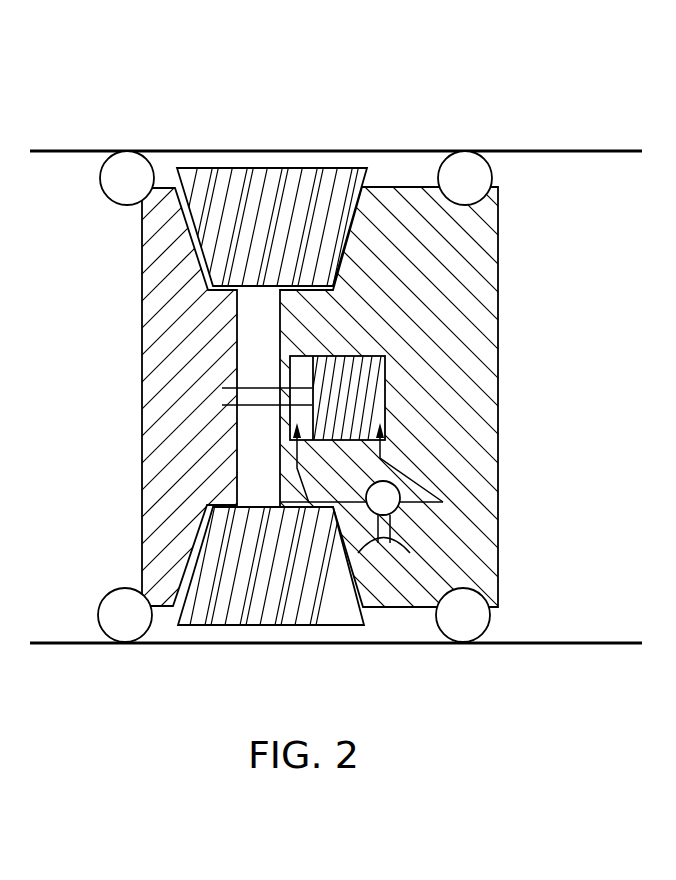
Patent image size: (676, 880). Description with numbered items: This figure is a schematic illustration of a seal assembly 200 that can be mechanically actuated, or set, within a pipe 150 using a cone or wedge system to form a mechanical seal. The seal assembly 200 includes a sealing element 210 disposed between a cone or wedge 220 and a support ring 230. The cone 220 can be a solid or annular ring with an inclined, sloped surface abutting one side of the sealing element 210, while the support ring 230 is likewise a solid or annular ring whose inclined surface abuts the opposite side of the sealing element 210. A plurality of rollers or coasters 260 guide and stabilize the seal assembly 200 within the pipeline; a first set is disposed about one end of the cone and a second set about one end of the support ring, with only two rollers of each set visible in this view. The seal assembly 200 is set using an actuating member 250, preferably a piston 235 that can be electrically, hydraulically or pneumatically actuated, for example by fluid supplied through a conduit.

The seal assembly 200 is at (445, 36).
The pipe 150 is at (560, 151).
The sealing element 210 is at (257, 167).
The cone or wedge 220 is at (173, 365).
The support ring 230 is at (478, 297).
The piston 235 is at (300, 365).
The actuating member 250 is at (410, 418).
The rollers 260 is at (147, 151).